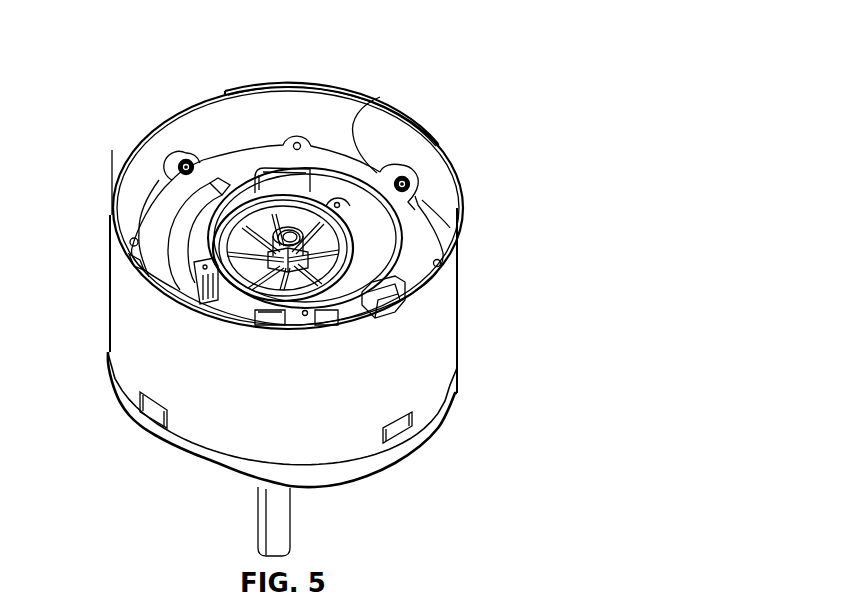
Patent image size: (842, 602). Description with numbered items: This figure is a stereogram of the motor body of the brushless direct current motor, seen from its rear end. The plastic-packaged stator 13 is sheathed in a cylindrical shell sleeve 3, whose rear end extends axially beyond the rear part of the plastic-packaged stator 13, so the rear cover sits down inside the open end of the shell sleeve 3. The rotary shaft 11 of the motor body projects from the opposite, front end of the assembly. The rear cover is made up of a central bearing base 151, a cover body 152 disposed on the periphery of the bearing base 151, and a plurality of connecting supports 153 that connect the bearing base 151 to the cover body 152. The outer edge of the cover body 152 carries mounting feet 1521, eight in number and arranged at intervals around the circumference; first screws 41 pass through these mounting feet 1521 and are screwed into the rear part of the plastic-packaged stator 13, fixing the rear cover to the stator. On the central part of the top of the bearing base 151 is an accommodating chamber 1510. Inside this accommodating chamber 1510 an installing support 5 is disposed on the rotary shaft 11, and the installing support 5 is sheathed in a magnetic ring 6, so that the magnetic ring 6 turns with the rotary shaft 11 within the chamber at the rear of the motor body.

The shell sleeve 3 is at (138, 297).
The installing support 5 is at (240, 255).
The magnetic ring 6 is at (318, 242).
The rotary shaft 11 is at (270, 518).
The plastic-packaged stator 13 is at (230, 152).
The first screws 41 is at (182, 160).
The bearing base 151 is at (298, 200).
The cover body 152 is at (168, 212).
The connecting supports 153 is at (385, 258).
The accommodating chamber 1510 is at (380, 97).
The mounting feet 1521 is at (170, 166).